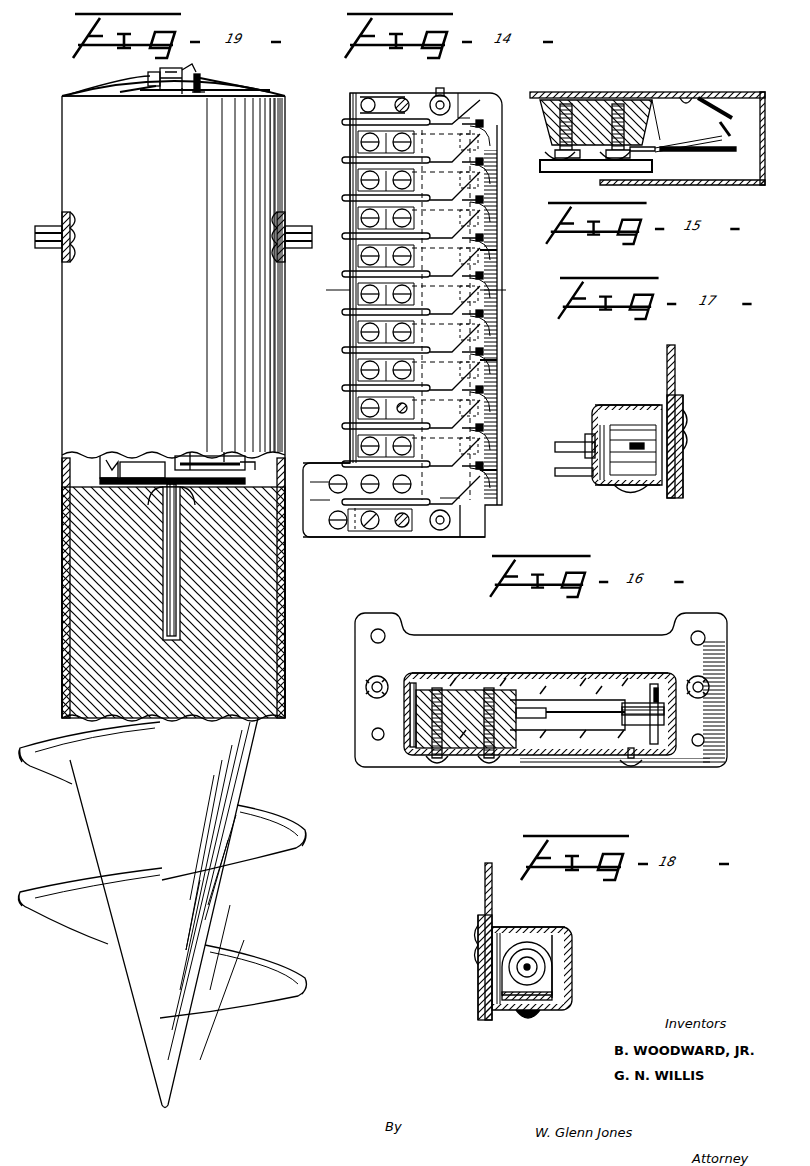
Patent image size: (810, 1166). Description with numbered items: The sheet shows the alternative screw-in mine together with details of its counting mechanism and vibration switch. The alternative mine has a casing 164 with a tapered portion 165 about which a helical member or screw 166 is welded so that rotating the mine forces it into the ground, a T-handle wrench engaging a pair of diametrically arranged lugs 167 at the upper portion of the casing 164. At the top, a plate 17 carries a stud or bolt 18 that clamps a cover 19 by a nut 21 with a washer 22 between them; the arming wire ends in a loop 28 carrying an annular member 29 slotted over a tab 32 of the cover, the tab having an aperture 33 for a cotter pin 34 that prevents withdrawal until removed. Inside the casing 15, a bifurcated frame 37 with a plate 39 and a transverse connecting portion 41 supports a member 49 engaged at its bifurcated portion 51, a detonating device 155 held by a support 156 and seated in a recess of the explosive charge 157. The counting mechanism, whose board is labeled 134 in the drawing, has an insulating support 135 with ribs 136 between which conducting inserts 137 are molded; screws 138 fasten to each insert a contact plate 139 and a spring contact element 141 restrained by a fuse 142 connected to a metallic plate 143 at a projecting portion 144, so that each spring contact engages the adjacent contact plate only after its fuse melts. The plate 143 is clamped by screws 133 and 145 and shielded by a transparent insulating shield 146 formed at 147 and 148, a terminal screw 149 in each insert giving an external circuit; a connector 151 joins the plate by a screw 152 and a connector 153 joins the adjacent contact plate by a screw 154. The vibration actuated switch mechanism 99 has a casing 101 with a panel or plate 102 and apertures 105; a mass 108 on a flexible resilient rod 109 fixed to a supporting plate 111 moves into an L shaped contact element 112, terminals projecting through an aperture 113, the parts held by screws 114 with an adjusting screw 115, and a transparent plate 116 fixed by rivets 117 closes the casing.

In FIG. 14, the casing 15 is at (329, 296).
In FIG. 16, the plate 17 is at (542, 788).
In FIG. 19, the stud or bolt 18 is at (168, 70).
In FIG. 16, the stud or bolt 18 is at (622, 790).
In FIG. 19, the cover 19 is at (104, 92).
In FIG. 19, the nut 21 is at (150, 76).
In FIG. 19, the washer 22 is at (118, 90).
In FIG. 19, the loop 28 is at (196, 92).
In FIG. 19, the annular member 29 is at (210, 78).
In FIG. 19, the tab 32 is at (184, 90).
In FIG. 19, the aperture 33 is at (186, 70).
In FIG. 19, the cotter pin 34 is at (198, 76).
In FIG. 19, the bifurcated frame 37 is at (108, 452).
In FIG. 19, the plate 39 is at (194, 448).
In FIG. 19, the transverse connecting portion 41 is at (244, 478).
In FIG. 19, the member 49 is at (222, 450).
In FIG. 19, the bifurcated portion 51 is at (244, 466).
In FIG. 17, the vibration actuated switch mechanism 99 is at (661, 396).
In FIG. 16, the vibration actuated switch mechanism 99 is at (473, 663).
In FIG. 18, the vibration actuated switch mechanism 99 is at (568, 920).
In FIG. 17, the casing 101 is at (612, 404).
In FIG. 16, the casing 101 is at (492, 674).
In FIG. 18, the casing 101 is at (540, 925).
In FIG. 17, the panel or plate 102 is at (676, 386).
In FIG. 16, the panel or plate 102 is at (426, 640).
In FIG. 18, the panel or plate 102 is at (486, 884).
In FIG. 16, the apertures 105 is at (380, 628).
In FIG. 16, the mass 108 is at (642, 702).
In FIG. 18, the mass 108 is at (537, 970).
In FIG. 17, the flexible resilient rod or wire 109 is at (640, 446).
In FIG. 16, the flexible resilient rod or wire 109 is at (588, 712).
In FIG. 18, the flexible resilient rod or wire 109 is at (527, 967).
In FIG. 17, the supporting plate 111 is at (574, 448).
In FIG. 16, the supporting plate 111 is at (570, 719).
In FIG. 17, the L shaped contact element 112 is at (574, 475).
In FIG. 16, the L shaped contact element 112 is at (664, 684).
In FIG. 18, the L shaped contact element 112 is at (566, 936).
In FIG. 16, the aperture 113 is at (414, 730).
In FIG. 17, the screws 114 is at (626, 492).
In FIG. 16, the screws 114 is at (444, 762).
In FIG. 16, the adjusting screw 115 is at (635, 766).
In FIG. 18, the adjusting screw 115 is at (530, 1018).
In FIG. 17, the plate 116 is at (684, 482).
In FIG. 16, the plate 116 is at (622, 690).
In FIG. 18, the plate 116 is at (478, 982).
In FIG. 17, the rivets 117 is at (686, 424).
In FIG. 16, the rivets 117 is at (712, 690).
In FIG. 18, the rivets 117 is at (474, 936).
In FIG. 14, the screws 133 is at (400, 96).
In FIG. 14, the terminal board 134 is at (478, 92).
In FIG. 14, the base or support 135 is at (350, 93).
In FIG. 15, the base or support 135 is at (552, 92).
In FIG. 14, the ribs 136 is at (342, 122).
In FIG. 15, the ribs 136 is at (545, 162).
In FIG. 14, the inserts 137 is at (358, 142).
In FIG. 15, the inserts 137 is at (576, 150).
In FIG. 14, the screws 138 is at (446, 302).
In FIG. 15, the screws 138 is at (645, 160).
In FIG. 14, the contact plate 139 is at (486, 252).
In FIG. 15, the contact plate 139 is at (711, 152).
In FIG. 14, the spring contact element 141 is at (486, 136).
In FIG. 15, the spring contact element 141 is at (686, 140).
In FIG. 14, the fuse 142 is at (490, 182).
In FIG. 15, the fuse 142 is at (726, 122).
In FIG. 14, the metallic plate 143 is at (462, 92).
In FIG. 15, the metallic plate 143 is at (688, 92).
In FIG. 14, the projecting portions 144 is at (518, 426).
In FIG. 15, the projecting portions 144 is at (730, 108).
In FIG. 14, the screws 145 is at (438, 92).
In FIG. 14, the shield 146 is at (318, 528).
In FIG. 15, the shield 146 is at (620, 92).
In FIG. 14, the formed portion of shield 147 is at (502, 488).
In FIG. 15, the formed portion of shield 147 is at (758, 148).
In FIG. 15, the formed portion of shield 148 is at (664, 186).
In FIG. 14, the terminal screw 149 is at (352, 226).
In FIG. 14, the connector 151 is at (356, 530).
In FIG. 14, the screw 152 is at (372, 530).
In FIG. 14, the connector 153 is at (330, 490).
In FIG. 14, the screw 154 is at (350, 470).
In FIG. 19, the detonating device 155 is at (156, 482).
In FIG. 19, the support 156 is at (178, 460).
In FIG. 19, the explosive charge 157 is at (285, 648).
In FIG. 19, the casing 164 is at (62, 636).
In FIG. 19, the tapered portion 165 is at (158, 1048).
In FIG. 19, the helical member or screw 166 is at (96, 928).
In FIG. 19, the lugs 167 is at (42, 228).